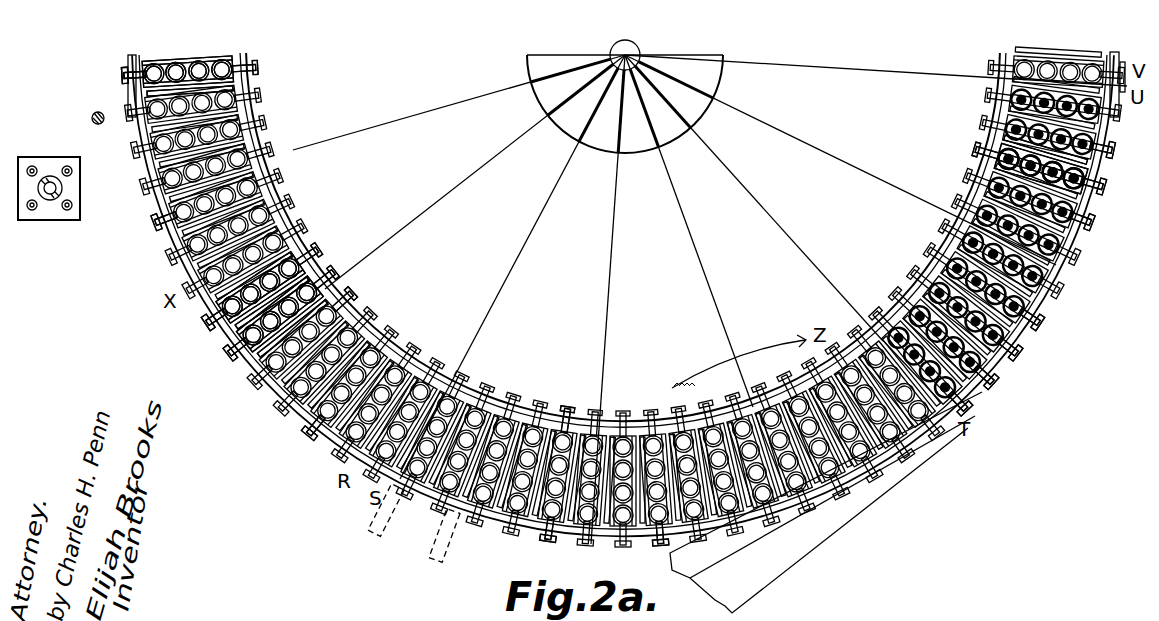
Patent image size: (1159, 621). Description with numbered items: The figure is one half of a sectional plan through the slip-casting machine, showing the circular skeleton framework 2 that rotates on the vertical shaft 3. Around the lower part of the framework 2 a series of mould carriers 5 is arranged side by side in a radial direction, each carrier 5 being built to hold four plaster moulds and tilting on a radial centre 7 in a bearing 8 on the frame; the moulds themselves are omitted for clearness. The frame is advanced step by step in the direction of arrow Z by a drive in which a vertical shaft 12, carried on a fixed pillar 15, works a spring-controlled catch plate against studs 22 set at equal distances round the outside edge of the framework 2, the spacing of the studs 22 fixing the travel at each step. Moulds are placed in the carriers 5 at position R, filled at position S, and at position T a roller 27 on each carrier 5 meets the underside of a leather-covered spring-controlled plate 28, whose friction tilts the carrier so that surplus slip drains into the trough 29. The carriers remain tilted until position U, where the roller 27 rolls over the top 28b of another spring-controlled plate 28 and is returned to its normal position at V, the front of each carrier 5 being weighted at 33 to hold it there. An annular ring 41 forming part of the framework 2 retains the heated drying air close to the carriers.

The skeleton framework 2 is at (293, 150).
The vertical shaft 3 is at (625, 93).
The mould carrier 5 is at (244, 91).
The radial centre 7 is at (345, 318).
The bearing 8 is at (180, 262).
The vertical shaft 12 is at (102, 127).
The fixed pillar 15 is at (63, 188).
The stud 22 is at (150, 168).
The roller 27 is at (132, 72).
The spring-controlled plate 28 is at (990, 393).
The top of spring-controlled plate 28b is at (1118, 104).
The trough 29 is at (890, 370).
The weight 33 is at (258, 332).
The annular ring 41 is at (543, 410).